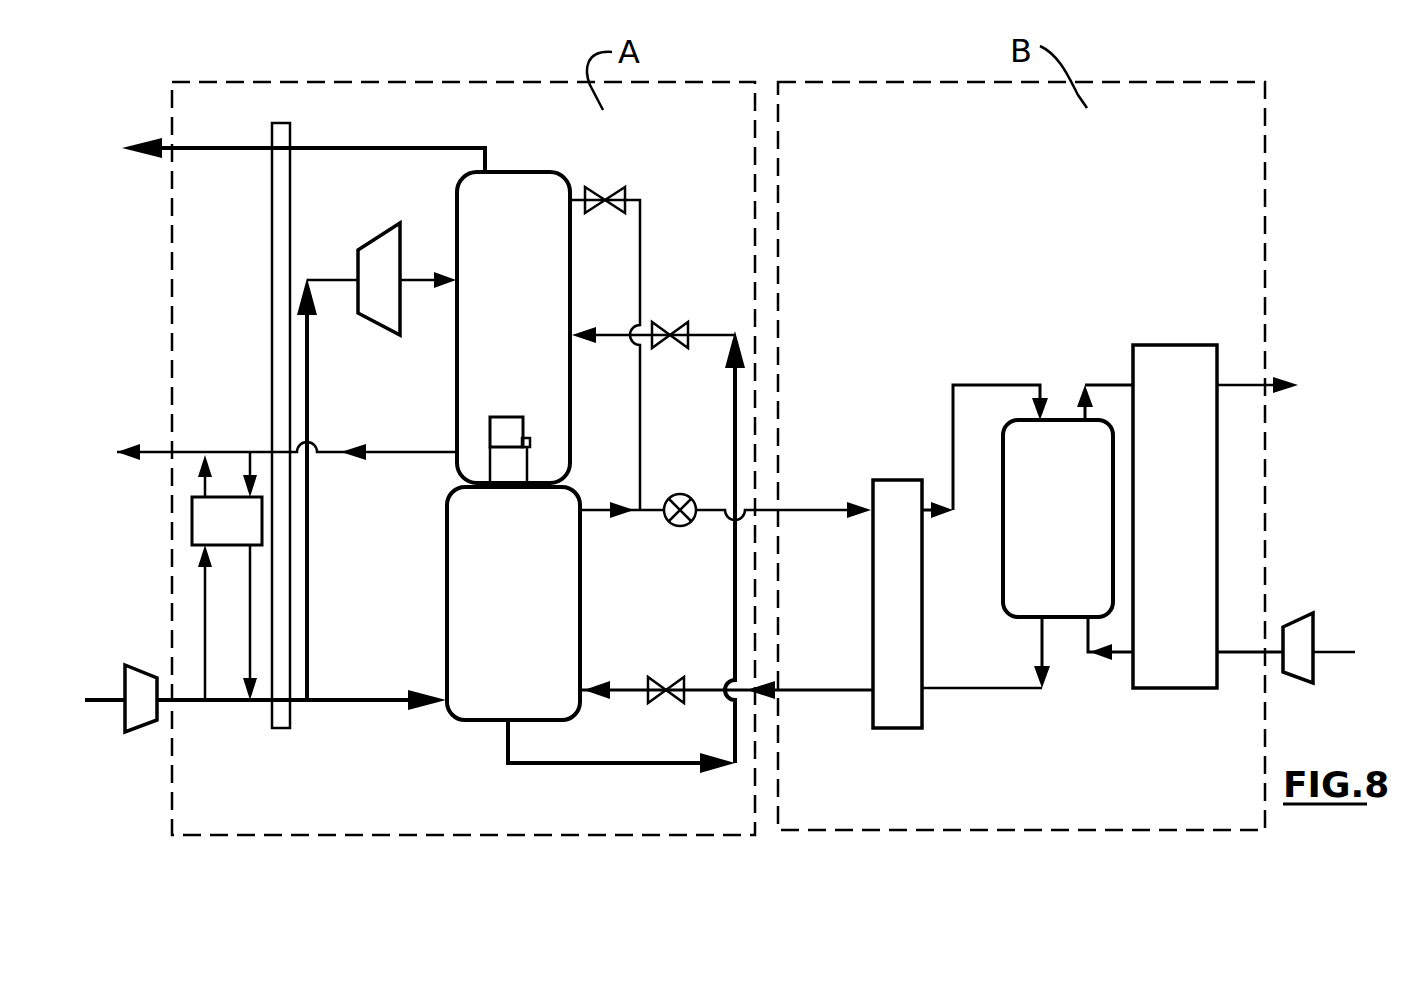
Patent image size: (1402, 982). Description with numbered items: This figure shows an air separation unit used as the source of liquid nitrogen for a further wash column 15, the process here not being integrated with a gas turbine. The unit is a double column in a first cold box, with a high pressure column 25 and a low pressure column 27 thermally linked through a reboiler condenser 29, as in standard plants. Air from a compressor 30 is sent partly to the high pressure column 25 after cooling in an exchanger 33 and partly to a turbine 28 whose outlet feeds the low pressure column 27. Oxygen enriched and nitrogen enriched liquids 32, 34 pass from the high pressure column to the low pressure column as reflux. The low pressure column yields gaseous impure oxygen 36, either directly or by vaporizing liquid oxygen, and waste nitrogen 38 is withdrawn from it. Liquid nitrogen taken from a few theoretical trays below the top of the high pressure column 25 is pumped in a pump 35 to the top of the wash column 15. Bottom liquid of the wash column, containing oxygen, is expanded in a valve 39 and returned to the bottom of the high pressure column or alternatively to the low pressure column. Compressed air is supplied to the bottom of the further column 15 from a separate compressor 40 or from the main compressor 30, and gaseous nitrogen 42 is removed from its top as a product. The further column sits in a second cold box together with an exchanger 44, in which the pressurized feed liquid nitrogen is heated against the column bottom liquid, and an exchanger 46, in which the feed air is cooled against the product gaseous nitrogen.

The further wash column 15 is at (1015, 583).
The high pressure column 25 is at (553, 625).
The low pressure column 27 is at (457, 405).
The turbine 28 is at (375, 303).
The reboiler condenser 29 is at (507, 420).
The compressor 30 is at (133, 668).
The oxygen enriched liquid 32 is at (634, 762).
The exchanger 33 is at (285, 718).
The nitrogen enriched liquid 34 is at (640, 400).
The pump 35 is at (690, 527).
The gaseous impure oxygen 36 is at (421, 452).
The waste nitrogen 38 is at (380, 148).
The valve 39 is at (682, 650).
The compressor 40 is at (1298, 632).
The gaseous nitrogen 42 is at (1238, 388).
The exchanger 44 is at (883, 640).
The exchanger 46 is at (1195, 545).